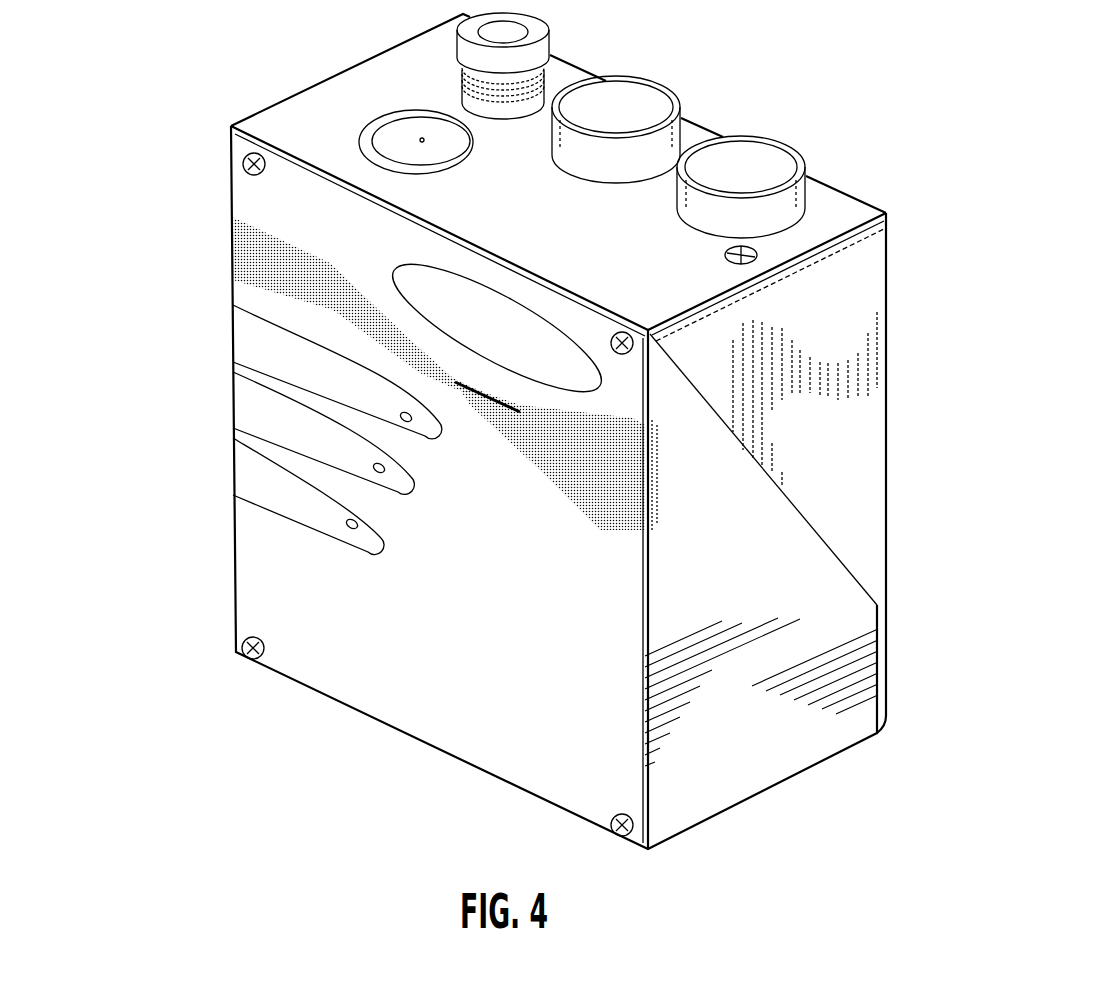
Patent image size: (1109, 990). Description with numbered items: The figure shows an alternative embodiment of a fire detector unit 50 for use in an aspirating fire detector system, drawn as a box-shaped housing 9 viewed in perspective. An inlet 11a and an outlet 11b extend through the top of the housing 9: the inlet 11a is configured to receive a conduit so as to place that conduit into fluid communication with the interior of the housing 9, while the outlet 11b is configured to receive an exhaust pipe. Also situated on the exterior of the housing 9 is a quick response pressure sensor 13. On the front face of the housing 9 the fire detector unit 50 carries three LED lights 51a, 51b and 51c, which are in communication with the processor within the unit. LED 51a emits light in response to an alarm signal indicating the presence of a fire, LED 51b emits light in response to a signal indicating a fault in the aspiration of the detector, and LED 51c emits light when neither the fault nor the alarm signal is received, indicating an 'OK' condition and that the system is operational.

The housing 9 is at (858, 431).
The inlet 11a is at (806, 168).
The outlet 11b is at (593, 145).
The quick response pressure sensor 13 is at (400, 133).
The fire detector unit 50 is at (529, 431).
The LED light 51a is at (400, 417).
The LED light 51b is at (373, 468).
The LED light 51c is at (346, 524).